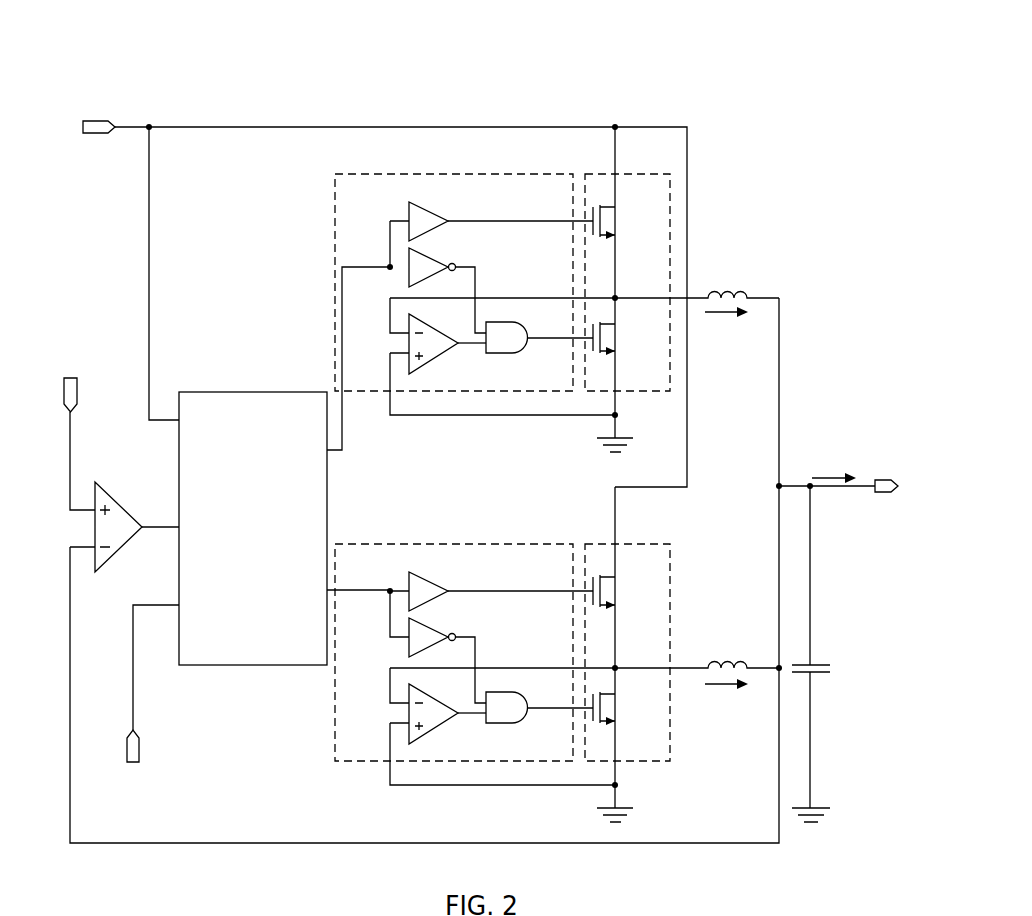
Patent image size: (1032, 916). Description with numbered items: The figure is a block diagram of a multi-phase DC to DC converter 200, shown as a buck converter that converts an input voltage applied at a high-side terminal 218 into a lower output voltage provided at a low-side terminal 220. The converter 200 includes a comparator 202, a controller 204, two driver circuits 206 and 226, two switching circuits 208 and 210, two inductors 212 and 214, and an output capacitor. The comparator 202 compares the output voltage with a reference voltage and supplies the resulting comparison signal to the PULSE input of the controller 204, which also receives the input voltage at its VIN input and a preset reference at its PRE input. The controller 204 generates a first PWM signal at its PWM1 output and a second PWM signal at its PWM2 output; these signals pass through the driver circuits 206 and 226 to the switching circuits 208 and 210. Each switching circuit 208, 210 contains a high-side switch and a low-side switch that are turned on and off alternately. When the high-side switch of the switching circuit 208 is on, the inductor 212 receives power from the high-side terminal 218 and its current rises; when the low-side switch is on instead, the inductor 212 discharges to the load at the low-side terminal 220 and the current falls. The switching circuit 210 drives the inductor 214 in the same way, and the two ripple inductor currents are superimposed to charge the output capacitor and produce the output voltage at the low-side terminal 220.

The multi-phase DC to DC converter 200 is at (722, 110).
The comparator 202 is at (125, 544).
The controller 204 is at (243, 666).
The driver circuit 206 is at (464, 174).
The switching circuit 208 is at (655, 393).
The switching circuit 210 is at (655, 762).
The inductor 212 is at (725, 288).
The inductor 214 is at (725, 658).
The high-side terminal 218 is at (92, 120).
The low-side terminal 220 is at (884, 481).
The driver circuit 226 is at (464, 544).